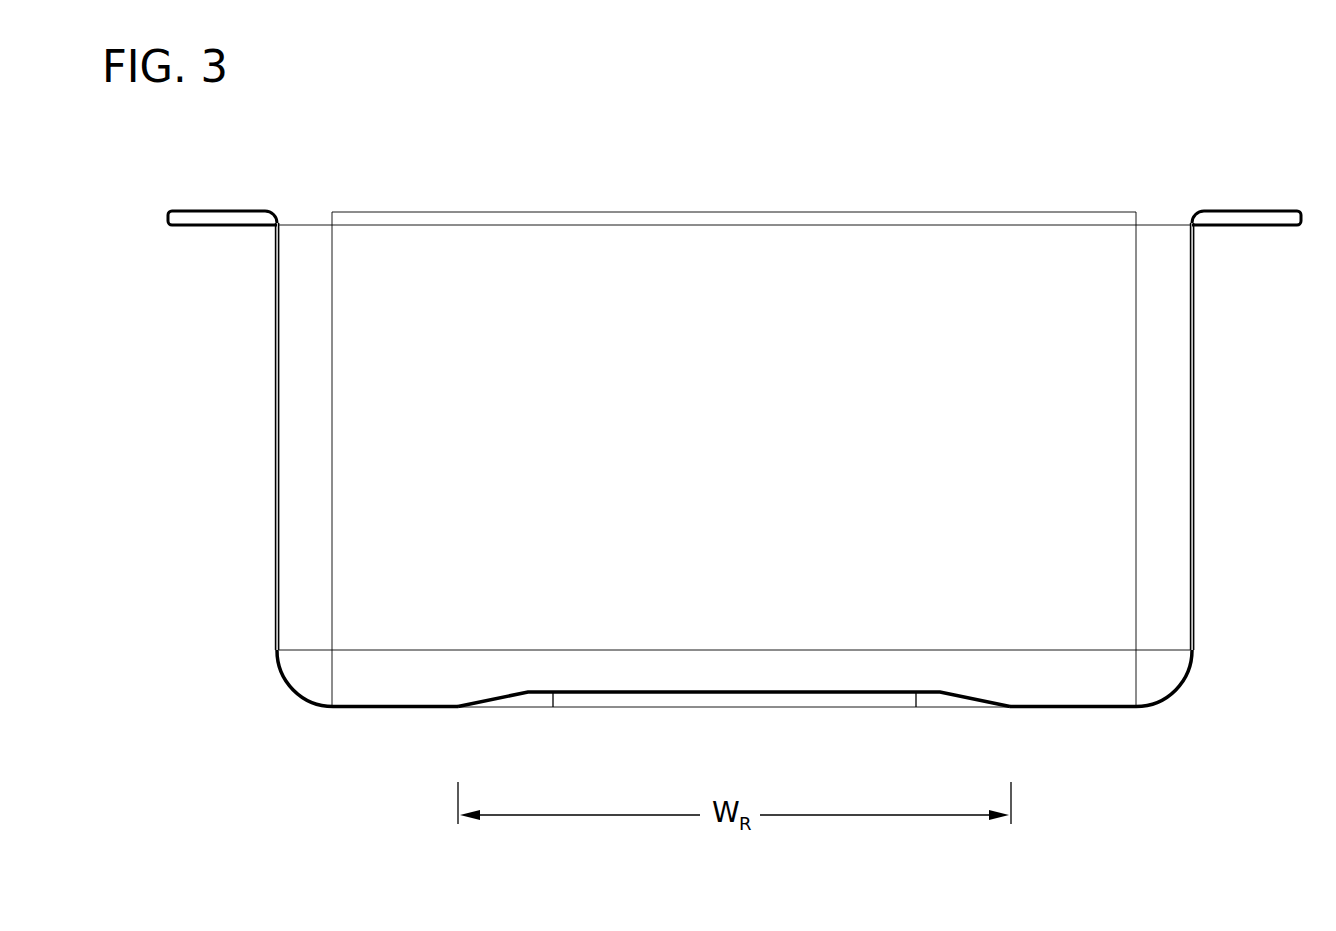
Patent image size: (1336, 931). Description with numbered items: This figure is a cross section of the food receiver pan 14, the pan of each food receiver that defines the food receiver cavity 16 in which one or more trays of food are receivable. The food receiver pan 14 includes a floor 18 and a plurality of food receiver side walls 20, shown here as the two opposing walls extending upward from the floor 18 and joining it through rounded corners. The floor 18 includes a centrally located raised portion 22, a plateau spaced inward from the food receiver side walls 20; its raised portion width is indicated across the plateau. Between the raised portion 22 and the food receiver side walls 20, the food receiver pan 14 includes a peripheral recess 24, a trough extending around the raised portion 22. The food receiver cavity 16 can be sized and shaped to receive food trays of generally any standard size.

The food receiver pan 14 is at (1195, 138).
The food receiver cavity 16 is at (739, 433).
The floor 18 is at (1046, 733).
The food receiver side walls 20 is at (275, 413).
The raised portion 22 is at (788, 690).
The peripheral recess 24 is at (1070, 690).